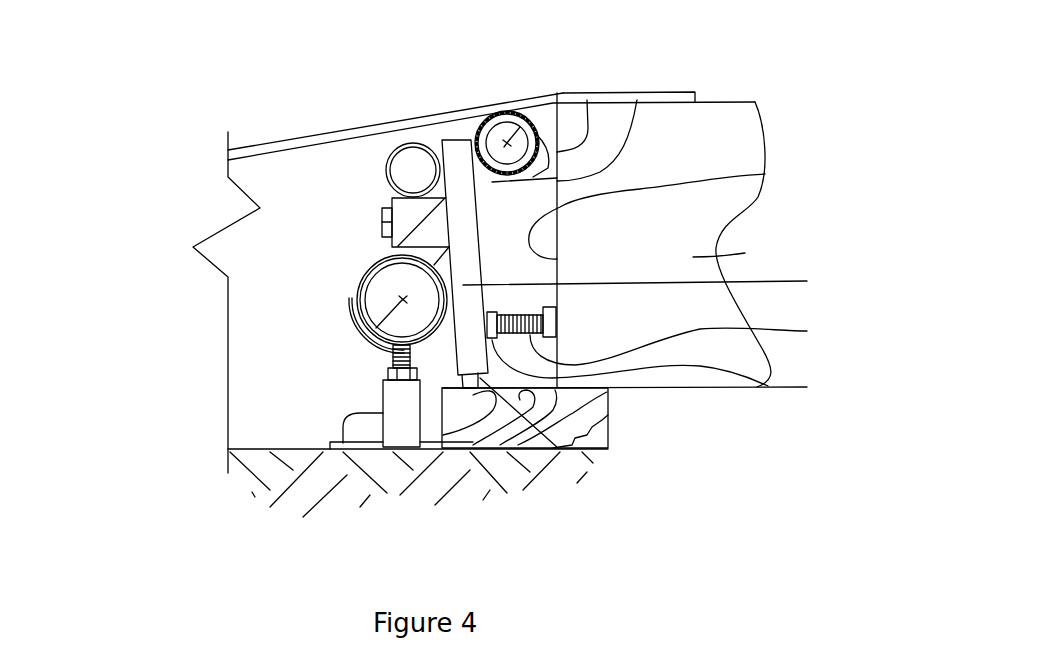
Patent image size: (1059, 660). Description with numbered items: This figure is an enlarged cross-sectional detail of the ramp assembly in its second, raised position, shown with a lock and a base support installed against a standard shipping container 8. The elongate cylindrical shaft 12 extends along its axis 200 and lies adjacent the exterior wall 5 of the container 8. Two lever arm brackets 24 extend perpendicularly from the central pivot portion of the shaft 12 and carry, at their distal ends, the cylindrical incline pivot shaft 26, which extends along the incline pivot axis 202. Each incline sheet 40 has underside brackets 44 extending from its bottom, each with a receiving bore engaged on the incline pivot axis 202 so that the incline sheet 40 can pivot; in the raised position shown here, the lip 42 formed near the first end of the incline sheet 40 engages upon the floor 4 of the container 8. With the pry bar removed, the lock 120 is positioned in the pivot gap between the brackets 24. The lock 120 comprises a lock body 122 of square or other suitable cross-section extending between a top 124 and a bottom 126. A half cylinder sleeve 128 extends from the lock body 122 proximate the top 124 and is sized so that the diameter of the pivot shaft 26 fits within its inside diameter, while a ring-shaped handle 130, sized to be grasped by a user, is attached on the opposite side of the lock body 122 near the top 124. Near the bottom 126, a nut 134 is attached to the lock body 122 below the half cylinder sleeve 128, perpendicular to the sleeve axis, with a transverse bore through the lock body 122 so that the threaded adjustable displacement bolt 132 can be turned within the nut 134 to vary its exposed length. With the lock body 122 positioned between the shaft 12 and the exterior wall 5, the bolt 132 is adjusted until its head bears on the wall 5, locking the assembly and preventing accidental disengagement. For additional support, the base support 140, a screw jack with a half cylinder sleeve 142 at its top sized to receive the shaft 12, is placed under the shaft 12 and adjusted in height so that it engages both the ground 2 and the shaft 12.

The ground 2 is at (258, 449).
The floor 4 is at (753, 96).
The exterior wall 5 is at (765, 174).
The shipping container 8 is at (745, 253).
The shaft 12 is at (366, 282).
The lever arm bracket 24 is at (637, 100).
The incline pivot shaft 26 is at (587, 100).
The incline sheet 40 is at (327, 134).
The lip 42 is at (687, 92).
The underside bracket 44 is at (426, 135).
The lock 120 is at (540, 450).
The lock body 122 is at (659, 240).
The top 124 is at (457, 138).
The bottom 126 is at (477, 390).
The half cylinder sleeve 128 is at (508, 111).
The handle 130 is at (386, 159).
The adjustable displacement bolt 132 is at (671, 336).
The nut 134 is at (649, 371).
The base support 140 is at (343, 452).
The lower roller 142 is at (352, 320).
The axis 200 is at (378, 336).
The incline pivot axis 202 is at (482, 233).